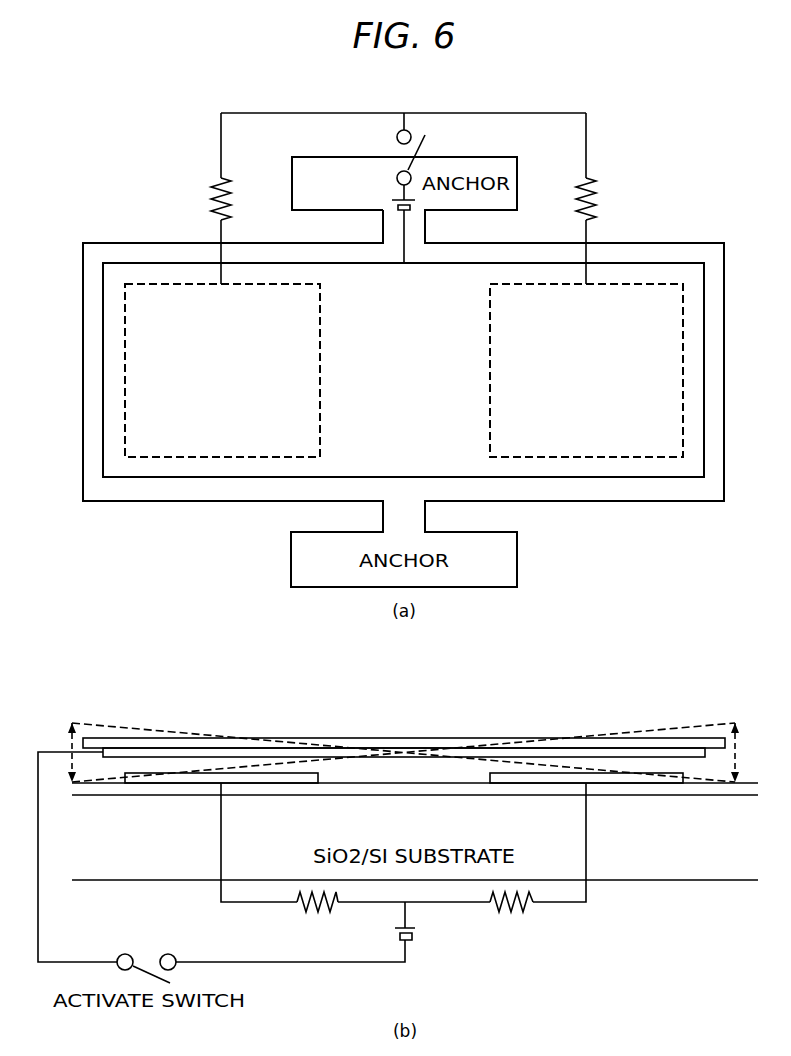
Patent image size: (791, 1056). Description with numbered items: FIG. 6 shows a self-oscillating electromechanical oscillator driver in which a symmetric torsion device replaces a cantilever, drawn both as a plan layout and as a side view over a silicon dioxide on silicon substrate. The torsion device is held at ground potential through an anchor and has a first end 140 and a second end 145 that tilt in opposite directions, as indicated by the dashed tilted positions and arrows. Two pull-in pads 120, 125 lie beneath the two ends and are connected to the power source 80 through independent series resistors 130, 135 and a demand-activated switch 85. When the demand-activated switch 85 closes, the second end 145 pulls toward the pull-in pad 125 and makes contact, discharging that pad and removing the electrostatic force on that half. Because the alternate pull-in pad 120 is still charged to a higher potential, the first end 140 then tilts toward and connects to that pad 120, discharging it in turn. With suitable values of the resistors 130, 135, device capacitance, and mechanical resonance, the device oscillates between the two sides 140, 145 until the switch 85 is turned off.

The power source 80 is at (412, 937).
The demand-activated switch 85 is at (425, 147).
The pull-in pad 120 is at (125, 367).
The pull-in pad 125 is at (683, 377).
The series resistor 130 is at (212, 193).
The series resistor 135 is at (627, 188).
The first end of torsion device 140 is at (128, 263).
The second end of torsion device 145 is at (660, 263).